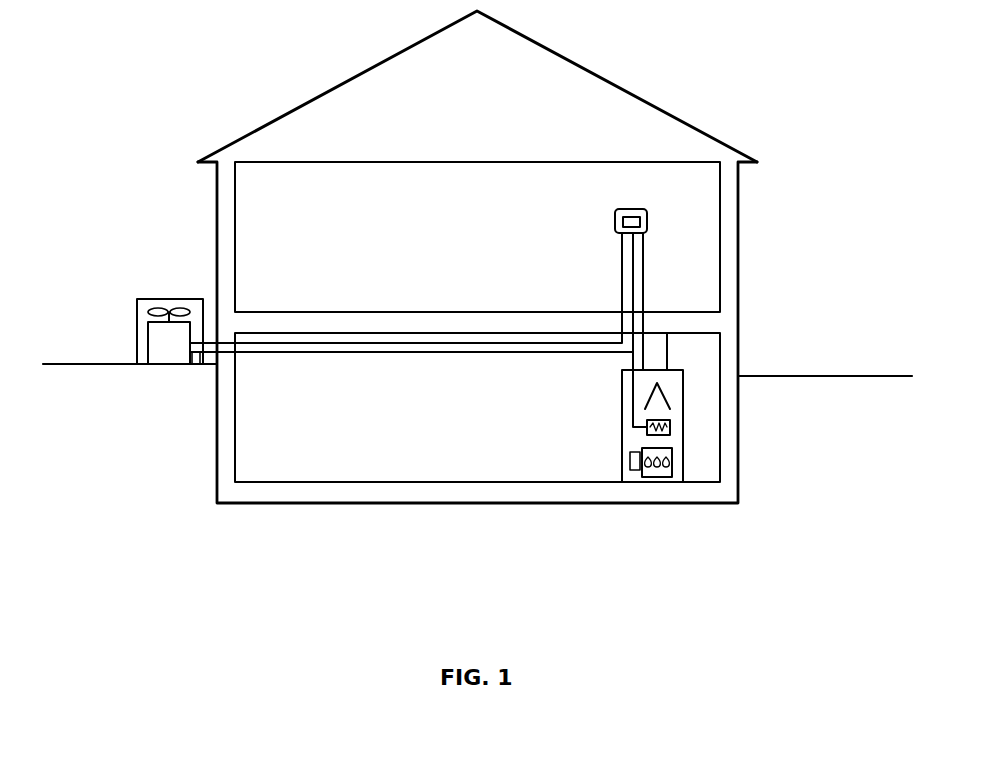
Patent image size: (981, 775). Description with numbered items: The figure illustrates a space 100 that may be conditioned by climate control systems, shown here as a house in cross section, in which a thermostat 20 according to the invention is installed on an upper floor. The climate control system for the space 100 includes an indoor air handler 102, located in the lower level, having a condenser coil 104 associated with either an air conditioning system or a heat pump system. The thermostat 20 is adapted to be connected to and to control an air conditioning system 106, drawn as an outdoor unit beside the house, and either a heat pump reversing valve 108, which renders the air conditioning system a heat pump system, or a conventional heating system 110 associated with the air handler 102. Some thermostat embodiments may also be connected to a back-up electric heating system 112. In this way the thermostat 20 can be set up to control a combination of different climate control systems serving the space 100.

The thermostat 20 is at (615, 222).
The space 100 is at (705, 237).
The indoor air handler 102 is at (683, 480).
The condenser coil 104 is at (668, 402).
The air conditioning system 106 is at (148, 343).
The heat pump reversing valve 108 is at (193, 365).
The conventional heating system 110 is at (635, 470).
The back-up electric heating system 112 is at (672, 425).